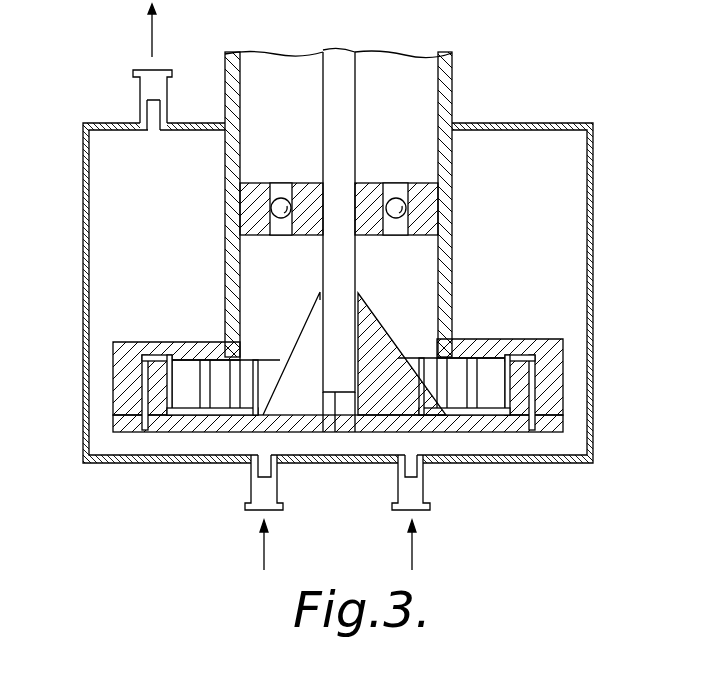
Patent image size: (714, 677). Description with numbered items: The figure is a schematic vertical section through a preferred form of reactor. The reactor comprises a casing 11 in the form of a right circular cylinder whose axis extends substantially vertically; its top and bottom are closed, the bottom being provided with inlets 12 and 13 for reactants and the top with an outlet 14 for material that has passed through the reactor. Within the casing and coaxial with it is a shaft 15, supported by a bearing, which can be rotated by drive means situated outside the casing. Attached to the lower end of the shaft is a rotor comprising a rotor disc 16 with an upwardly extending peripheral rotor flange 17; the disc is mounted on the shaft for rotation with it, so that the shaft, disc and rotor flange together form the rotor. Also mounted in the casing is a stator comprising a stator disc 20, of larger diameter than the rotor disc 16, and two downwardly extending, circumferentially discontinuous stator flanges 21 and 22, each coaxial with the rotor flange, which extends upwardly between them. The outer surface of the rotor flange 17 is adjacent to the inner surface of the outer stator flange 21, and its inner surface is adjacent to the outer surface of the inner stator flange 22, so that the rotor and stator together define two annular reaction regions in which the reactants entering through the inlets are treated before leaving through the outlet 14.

The casing 11 is at (595, 210).
The inlet 12 is at (248, 480).
The inlet 13 is at (423, 483).
The outlet 14 is at (145, 90).
The shaft 15 is at (345, 84).
The rotor disc 16 is at (487, 420).
The rotor flange 17 is at (515, 388).
The stator disc 20 is at (497, 338).
The outer stator flange 21 is at (115, 372).
The inner stator flange 22 is at (187, 398).